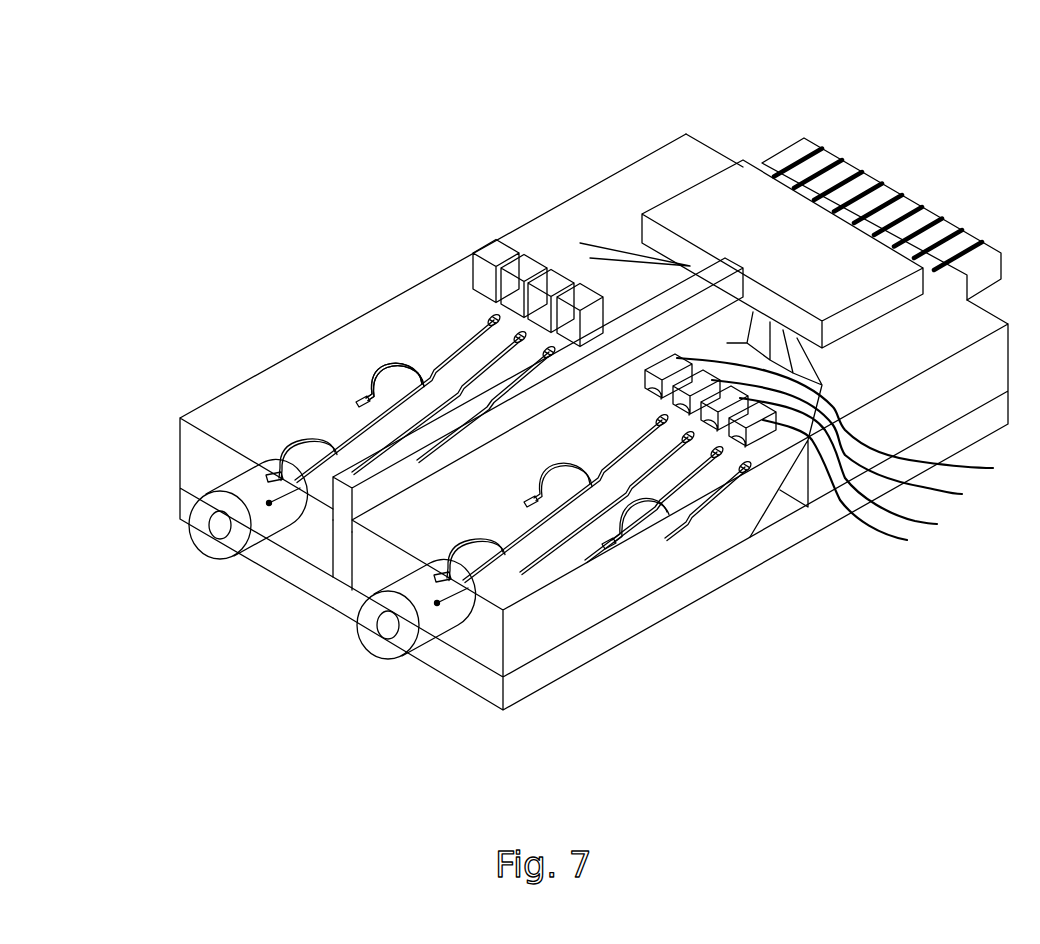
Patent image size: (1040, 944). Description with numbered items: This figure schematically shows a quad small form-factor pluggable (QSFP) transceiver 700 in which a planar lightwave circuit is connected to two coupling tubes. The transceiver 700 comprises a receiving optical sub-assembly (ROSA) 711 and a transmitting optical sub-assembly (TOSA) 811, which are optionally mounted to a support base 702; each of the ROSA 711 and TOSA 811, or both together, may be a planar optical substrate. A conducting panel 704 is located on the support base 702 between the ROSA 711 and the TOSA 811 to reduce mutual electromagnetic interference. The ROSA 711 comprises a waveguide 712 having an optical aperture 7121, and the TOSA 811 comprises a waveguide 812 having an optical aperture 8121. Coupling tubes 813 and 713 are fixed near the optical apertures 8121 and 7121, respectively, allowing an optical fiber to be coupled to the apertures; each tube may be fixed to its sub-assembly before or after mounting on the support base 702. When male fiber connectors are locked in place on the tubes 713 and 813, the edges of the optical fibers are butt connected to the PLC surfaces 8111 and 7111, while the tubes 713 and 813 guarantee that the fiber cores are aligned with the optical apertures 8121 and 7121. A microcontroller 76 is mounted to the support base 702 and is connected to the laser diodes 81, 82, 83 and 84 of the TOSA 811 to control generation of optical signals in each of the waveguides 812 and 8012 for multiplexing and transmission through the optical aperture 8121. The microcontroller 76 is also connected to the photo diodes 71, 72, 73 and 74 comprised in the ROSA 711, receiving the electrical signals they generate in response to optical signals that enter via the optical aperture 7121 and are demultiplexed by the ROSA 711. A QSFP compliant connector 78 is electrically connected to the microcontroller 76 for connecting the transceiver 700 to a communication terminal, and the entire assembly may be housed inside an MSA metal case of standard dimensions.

The quad small form-factor pluggable (QSFP) transceiver 700 is at (880, 111).
The QSFP compliant connector 78 is at (918, 198).
The microcontroller 76 is at (751, 348).
The laser diode 81 is at (495, 256).
The laser diode 82 is at (527, 267).
The laser diode 83 is at (556, 283).
The laser diode 84 is at (585, 290).
The photo diode 71 is at (826, 495).
The photo diode 72 is at (840, 465).
The photo diode 73 is at (836, 442).
The photo diode 74 is at (839, 421).
The receiving optical sub-assembly (ROSA) 711 is at (608, 435).
The waveguide 712 is at (553, 550).
The optical aperture 7121 is at (427, 613).
The coupling tube 713 is at (347, 637).
The PLC surface 7111 is at (470, 638).
The transmitting optical sub-assembly (TOSA) 811 is at (470, 323).
The waveguide 812 is at (310, 462).
The optical aperture 8121 is at (265, 502).
The coupling tube 813 is at (192, 542).
The PLC surface 8111 is at (205, 478).
The waveguide 8012 is at (417, 357).
The conducting panel 704 is at (338, 560).
The support base 702 is at (350, 600).